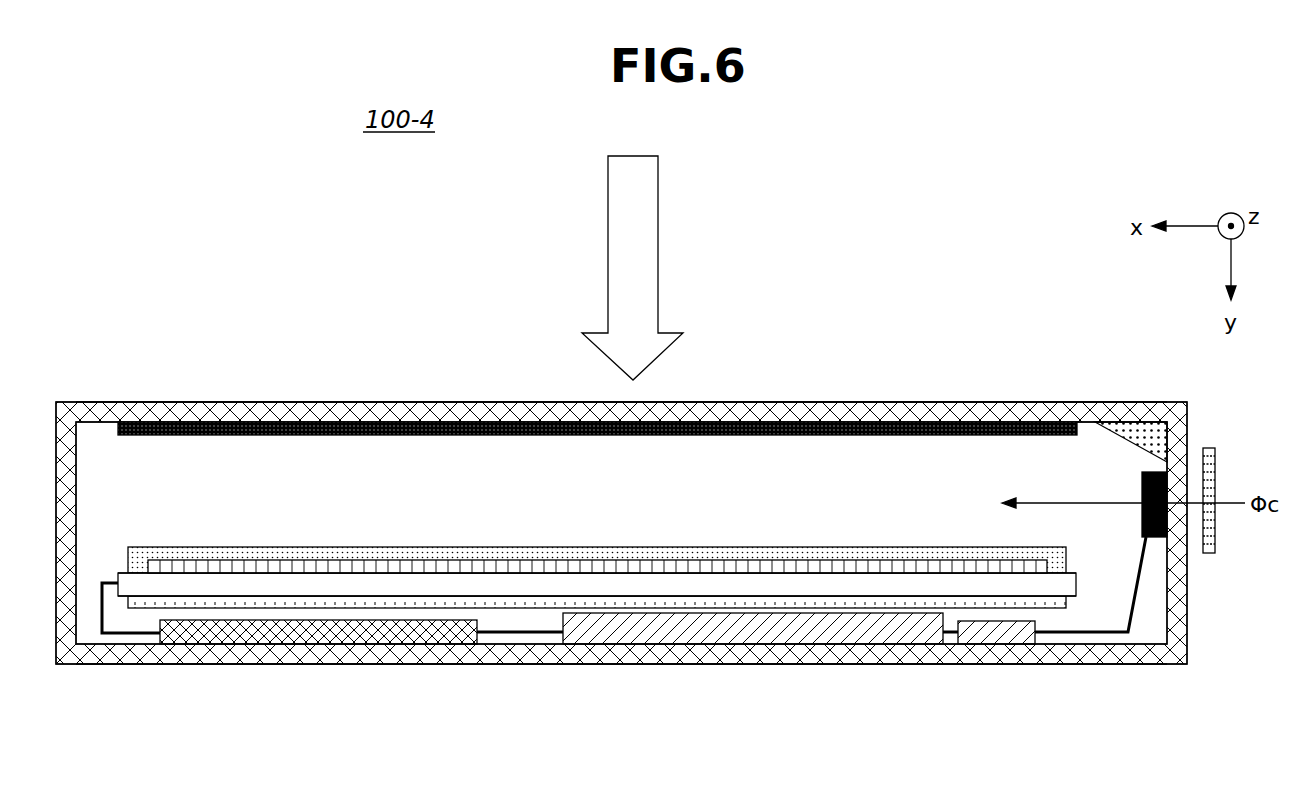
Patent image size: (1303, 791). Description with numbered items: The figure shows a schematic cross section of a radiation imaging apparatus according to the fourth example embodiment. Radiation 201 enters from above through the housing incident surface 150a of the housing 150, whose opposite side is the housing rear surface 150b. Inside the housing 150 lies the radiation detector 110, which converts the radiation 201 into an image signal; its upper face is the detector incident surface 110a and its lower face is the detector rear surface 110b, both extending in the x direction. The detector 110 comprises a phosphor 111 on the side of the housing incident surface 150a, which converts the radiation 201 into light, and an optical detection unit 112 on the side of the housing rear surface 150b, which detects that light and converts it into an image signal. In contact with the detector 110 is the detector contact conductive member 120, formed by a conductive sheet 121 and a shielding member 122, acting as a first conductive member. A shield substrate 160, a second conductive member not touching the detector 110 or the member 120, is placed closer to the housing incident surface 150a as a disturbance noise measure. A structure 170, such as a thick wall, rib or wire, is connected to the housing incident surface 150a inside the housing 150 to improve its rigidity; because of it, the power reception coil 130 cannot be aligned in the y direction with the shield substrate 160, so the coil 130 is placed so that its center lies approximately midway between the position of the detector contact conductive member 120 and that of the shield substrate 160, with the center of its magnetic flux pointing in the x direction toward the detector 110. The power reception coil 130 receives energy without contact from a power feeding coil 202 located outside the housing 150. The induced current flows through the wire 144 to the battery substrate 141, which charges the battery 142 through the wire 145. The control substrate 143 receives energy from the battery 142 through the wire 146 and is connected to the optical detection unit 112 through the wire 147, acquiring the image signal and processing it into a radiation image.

The radiation detector 110 is at (597, 522).
The detector incident surface 110a is at (510, 544).
The detector rear surface 110b is at (494, 608).
The phosphor 111 is at (312, 567).
The optical detection unit 112 is at (212, 583).
The detector contact conductive member 120 is at (597, 459).
The conductive sheet 121 is at (748, 547).
The shielding member 122 is at (825, 598).
The power reception coil 130 is at (1156, 546).
The battery substrate 141 is at (1002, 638).
The battery 142 is at (757, 636).
The control substrate 143 is at (316, 636).
The wire 144 is at (1081, 638).
The wire 145 is at (950, 638).
The wire 146 is at (537, 636).
The wire 147 is at (136, 636).
The housing 150 is at (852, 656).
The housing incident surface 150a is at (442, 392).
The housing rear surface 150b is at (651, 676).
The shield substrate 160 is at (395, 422).
The structure 170 is at (1148, 436).
The radiation 201 is at (648, 240).
The power feeding coil 202 is at (1210, 448).